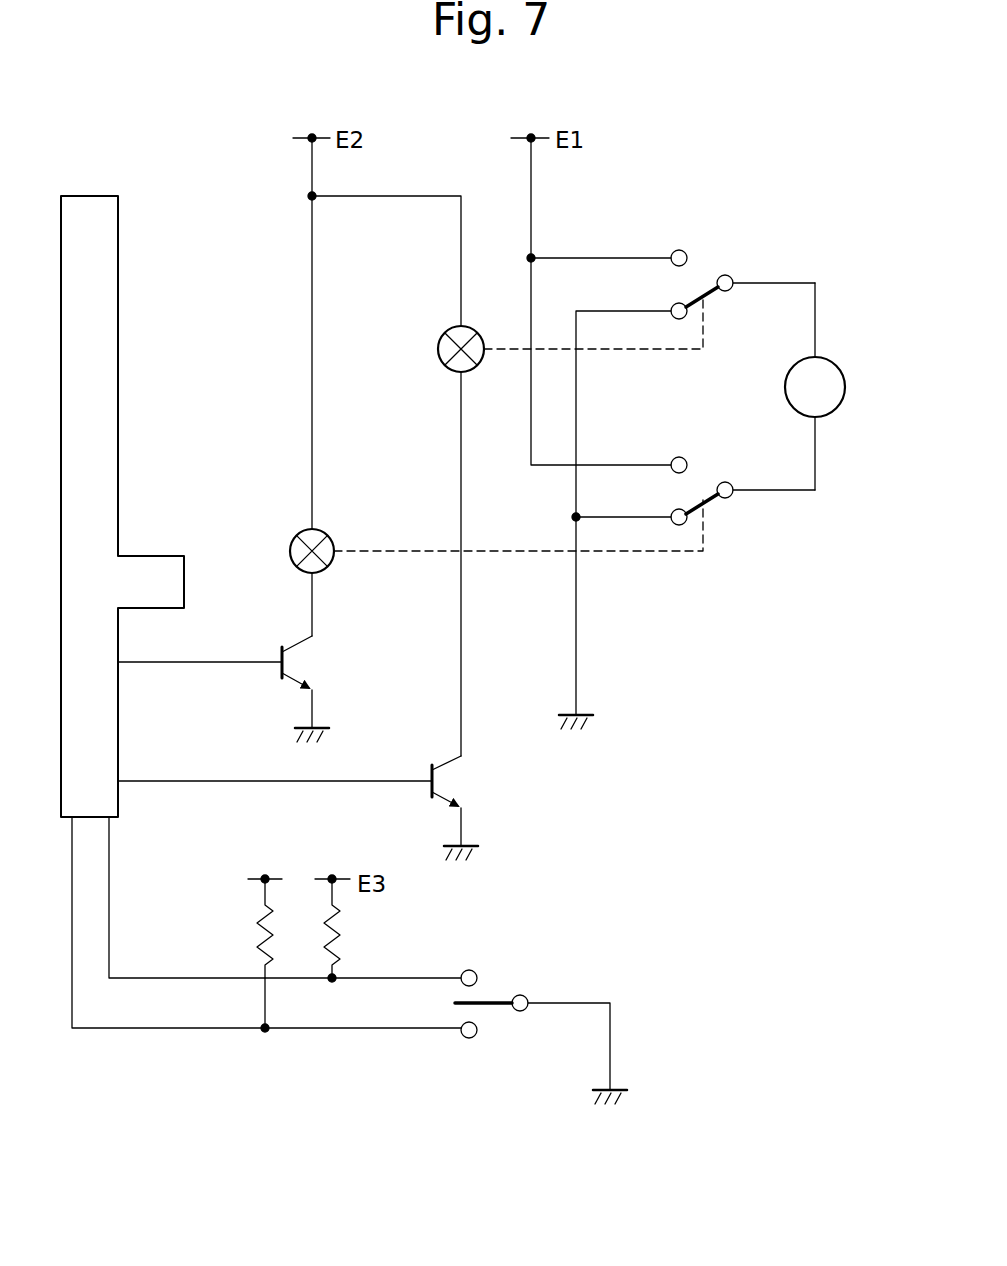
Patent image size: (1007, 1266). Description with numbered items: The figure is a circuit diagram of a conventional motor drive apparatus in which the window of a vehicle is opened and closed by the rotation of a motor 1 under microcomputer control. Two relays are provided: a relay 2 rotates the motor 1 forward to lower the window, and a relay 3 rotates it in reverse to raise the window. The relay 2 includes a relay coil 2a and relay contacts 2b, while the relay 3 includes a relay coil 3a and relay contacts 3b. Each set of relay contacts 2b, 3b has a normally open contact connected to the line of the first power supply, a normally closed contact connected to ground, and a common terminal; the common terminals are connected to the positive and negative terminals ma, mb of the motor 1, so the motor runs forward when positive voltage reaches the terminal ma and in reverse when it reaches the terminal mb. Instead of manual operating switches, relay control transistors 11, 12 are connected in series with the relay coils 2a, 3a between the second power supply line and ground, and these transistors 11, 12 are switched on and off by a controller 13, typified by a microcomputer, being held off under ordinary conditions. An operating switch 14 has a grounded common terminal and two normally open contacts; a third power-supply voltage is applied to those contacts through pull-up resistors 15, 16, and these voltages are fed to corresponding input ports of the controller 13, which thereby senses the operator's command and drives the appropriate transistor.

The motor 1 is at (844, 386).
The positive terminal ma is at (815, 355).
The negative terminal mb is at (815, 420).
The relay 2 is at (609, 281).
The relay coil 2a is at (445, 332).
The relay contacts 2b is at (703, 267).
The relay 3 is at (534, 484).
The relay coil 3a is at (300, 533).
The relay contacts 3b is at (703, 473).
The relay control transistor 11 is at (440, 759).
The relay control transistor 12 is at (290, 641).
The controller 13 is at (93, 196).
The operating switch 14 is at (503, 1015).
The pull-up resistor 15 is at (343, 925).
The pull-up resistor 16 is at (256, 935).